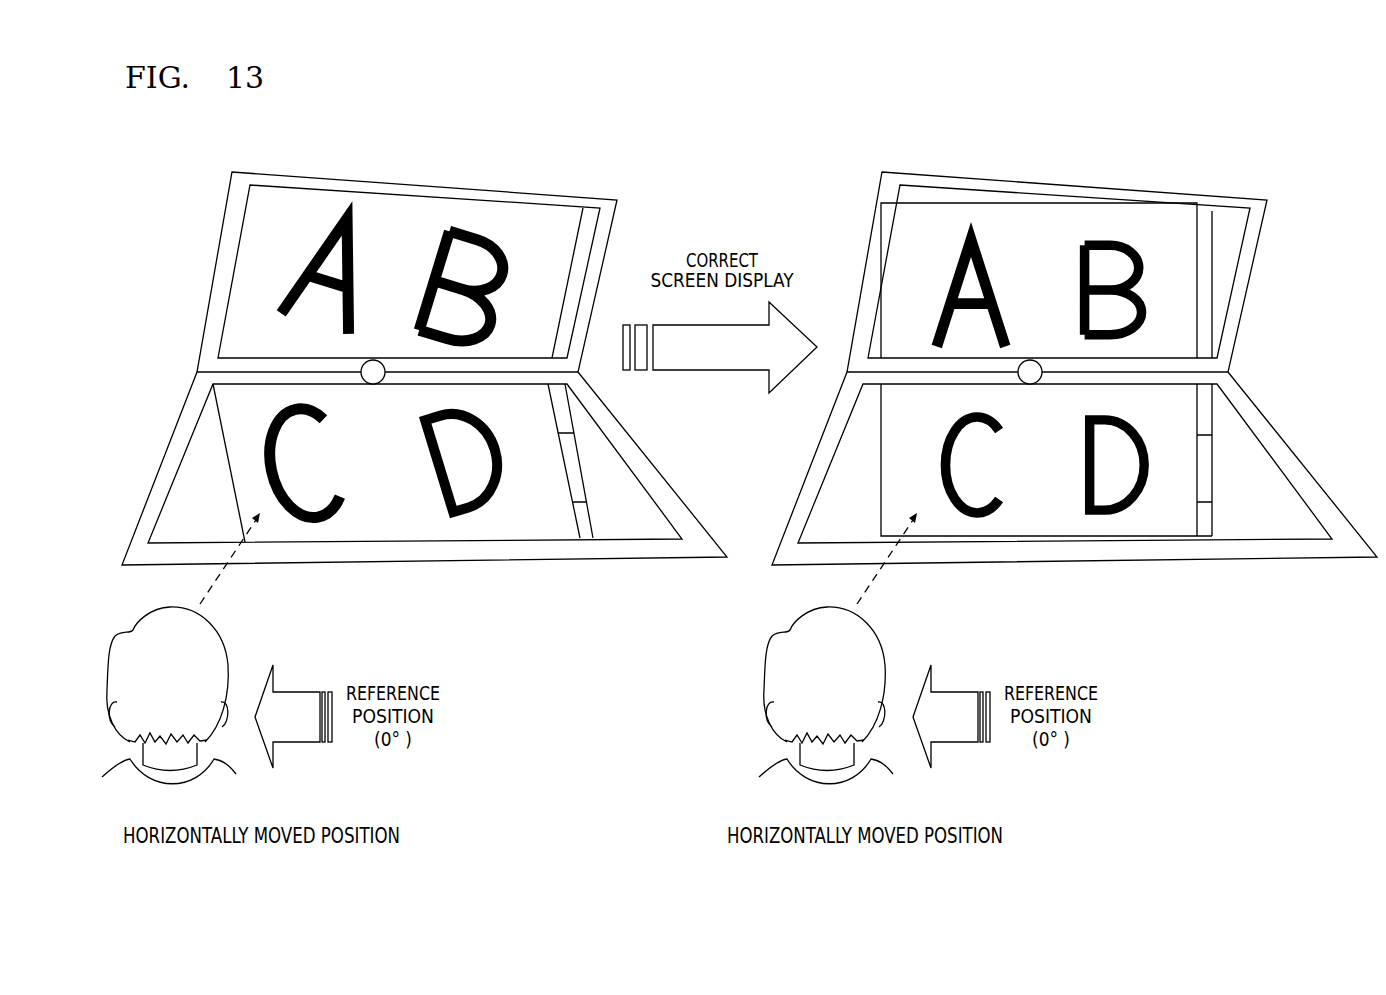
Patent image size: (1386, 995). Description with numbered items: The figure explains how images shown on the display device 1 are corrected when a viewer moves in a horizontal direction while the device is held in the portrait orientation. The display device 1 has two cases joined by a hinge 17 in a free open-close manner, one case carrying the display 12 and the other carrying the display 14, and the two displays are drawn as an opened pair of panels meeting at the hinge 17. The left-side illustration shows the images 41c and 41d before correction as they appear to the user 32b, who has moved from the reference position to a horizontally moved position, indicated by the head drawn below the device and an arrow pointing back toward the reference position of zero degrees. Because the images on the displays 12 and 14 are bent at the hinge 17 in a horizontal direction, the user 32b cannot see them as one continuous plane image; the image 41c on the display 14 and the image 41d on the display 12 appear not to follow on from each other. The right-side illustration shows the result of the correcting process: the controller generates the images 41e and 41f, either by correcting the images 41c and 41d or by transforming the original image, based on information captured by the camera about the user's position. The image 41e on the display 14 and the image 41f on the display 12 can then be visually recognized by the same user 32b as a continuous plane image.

The display device 1 is at (433, 162).
The display 14 is at (537, 220).
The display 12 is at (643, 540).
The hinge 17 is at (184, 372).
The image 41c is at (245, 292).
The image 41d is at (200, 455).
The image 41e is at (1226, 277).
The image 41f is at (1254, 457).
The user 32b is at (234, 645).